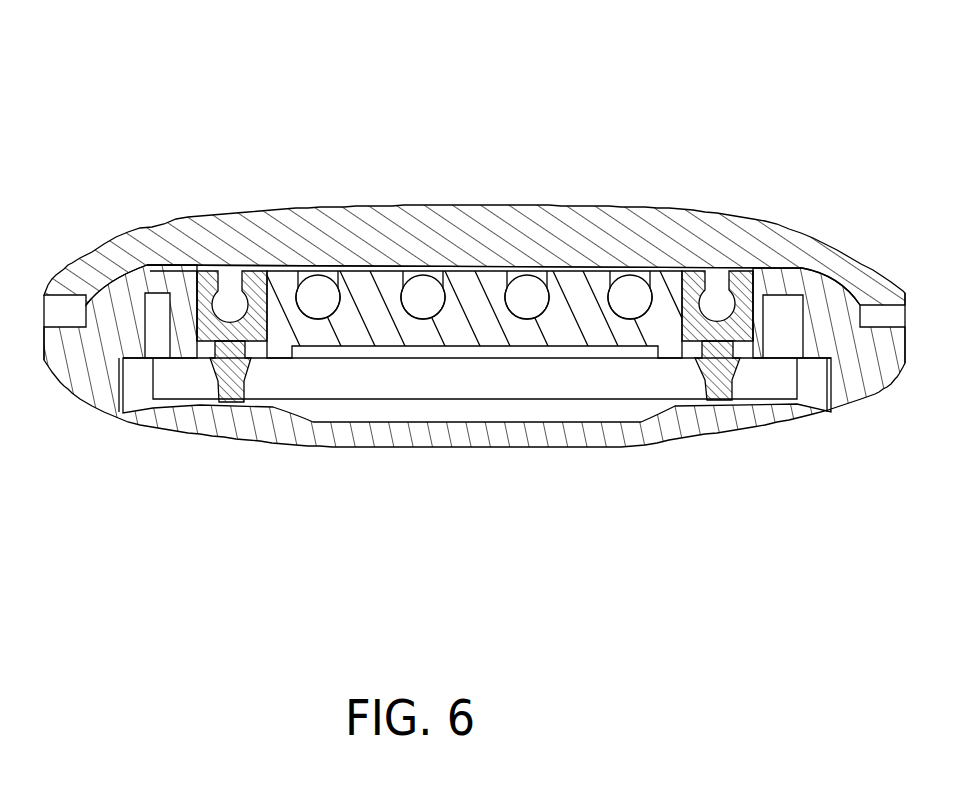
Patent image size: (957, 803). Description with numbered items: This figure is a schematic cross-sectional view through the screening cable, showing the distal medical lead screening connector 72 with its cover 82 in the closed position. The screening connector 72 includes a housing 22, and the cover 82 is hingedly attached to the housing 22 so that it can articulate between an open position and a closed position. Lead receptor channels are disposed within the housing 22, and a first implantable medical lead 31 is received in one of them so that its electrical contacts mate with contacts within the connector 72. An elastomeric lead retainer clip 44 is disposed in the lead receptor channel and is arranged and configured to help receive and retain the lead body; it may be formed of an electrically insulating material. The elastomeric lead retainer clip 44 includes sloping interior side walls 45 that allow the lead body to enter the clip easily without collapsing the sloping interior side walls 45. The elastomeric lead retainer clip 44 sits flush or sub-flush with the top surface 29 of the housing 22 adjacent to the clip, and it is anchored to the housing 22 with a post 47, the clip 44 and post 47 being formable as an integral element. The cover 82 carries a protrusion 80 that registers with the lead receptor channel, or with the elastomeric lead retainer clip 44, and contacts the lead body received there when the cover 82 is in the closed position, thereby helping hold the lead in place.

The medical lead screening connector 72 is at (477, 150).
The cover 82 is at (763, 216).
The top surface 29 is at (178, 266).
The housing 22 is at (507, 447).
The first implantable medical lead 31 is at (323, 294).
The protrusion 80 is at (233, 272).
The sloping interior side walls 45 is at (700, 271).
The post 47 is at (735, 380).
The elastomeric lead retainer clip 44 is at (196, 307).